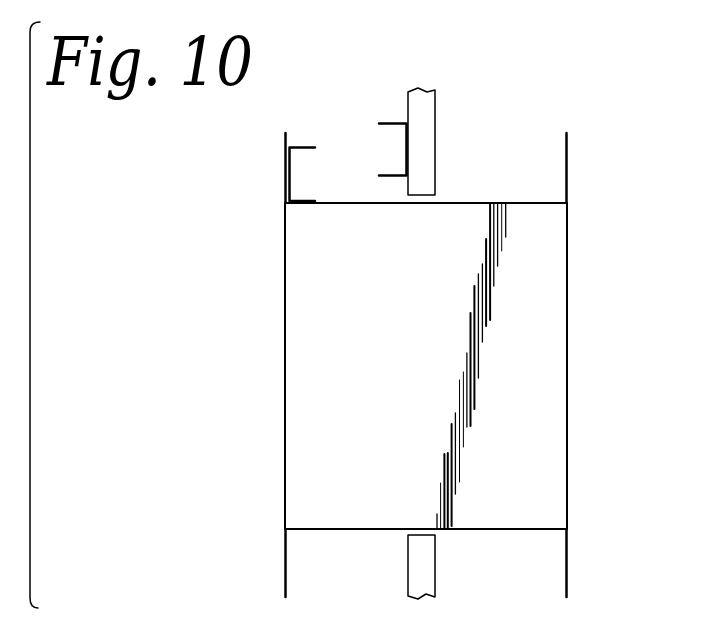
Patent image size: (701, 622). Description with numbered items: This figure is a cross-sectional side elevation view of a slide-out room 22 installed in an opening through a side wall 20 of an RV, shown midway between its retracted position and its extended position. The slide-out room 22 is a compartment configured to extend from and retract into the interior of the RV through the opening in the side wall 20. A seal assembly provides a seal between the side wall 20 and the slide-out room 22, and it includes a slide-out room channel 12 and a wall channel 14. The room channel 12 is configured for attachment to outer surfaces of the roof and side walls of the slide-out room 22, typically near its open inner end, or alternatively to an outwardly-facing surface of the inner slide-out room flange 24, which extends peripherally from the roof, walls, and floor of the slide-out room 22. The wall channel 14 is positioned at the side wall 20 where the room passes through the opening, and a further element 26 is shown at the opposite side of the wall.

The slide-out room channel 12 is at (289, 181).
The wall channel 14 is at (407, 155).
The side wall 20 is at (437, 140).
The slide-out room 22 is at (330, 505).
The inner slide-out room flange 24 is at (284, 143).
The side plate 26 is at (570, 157).